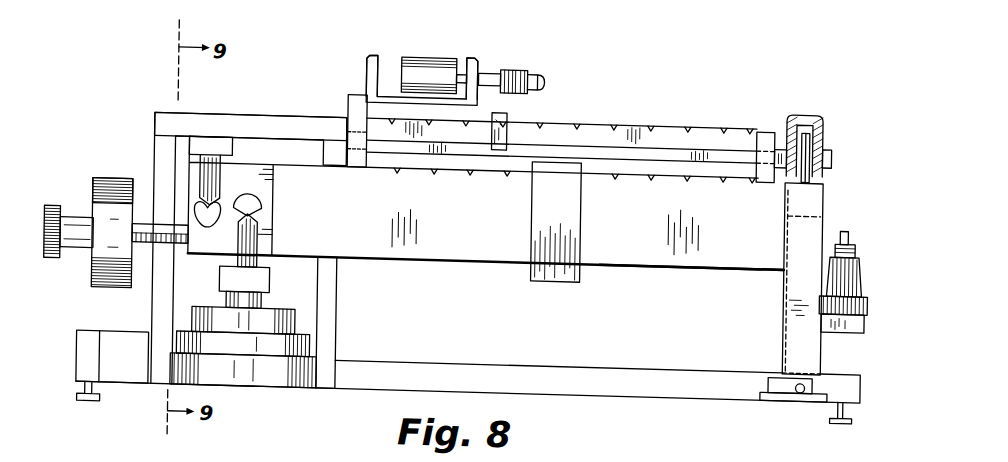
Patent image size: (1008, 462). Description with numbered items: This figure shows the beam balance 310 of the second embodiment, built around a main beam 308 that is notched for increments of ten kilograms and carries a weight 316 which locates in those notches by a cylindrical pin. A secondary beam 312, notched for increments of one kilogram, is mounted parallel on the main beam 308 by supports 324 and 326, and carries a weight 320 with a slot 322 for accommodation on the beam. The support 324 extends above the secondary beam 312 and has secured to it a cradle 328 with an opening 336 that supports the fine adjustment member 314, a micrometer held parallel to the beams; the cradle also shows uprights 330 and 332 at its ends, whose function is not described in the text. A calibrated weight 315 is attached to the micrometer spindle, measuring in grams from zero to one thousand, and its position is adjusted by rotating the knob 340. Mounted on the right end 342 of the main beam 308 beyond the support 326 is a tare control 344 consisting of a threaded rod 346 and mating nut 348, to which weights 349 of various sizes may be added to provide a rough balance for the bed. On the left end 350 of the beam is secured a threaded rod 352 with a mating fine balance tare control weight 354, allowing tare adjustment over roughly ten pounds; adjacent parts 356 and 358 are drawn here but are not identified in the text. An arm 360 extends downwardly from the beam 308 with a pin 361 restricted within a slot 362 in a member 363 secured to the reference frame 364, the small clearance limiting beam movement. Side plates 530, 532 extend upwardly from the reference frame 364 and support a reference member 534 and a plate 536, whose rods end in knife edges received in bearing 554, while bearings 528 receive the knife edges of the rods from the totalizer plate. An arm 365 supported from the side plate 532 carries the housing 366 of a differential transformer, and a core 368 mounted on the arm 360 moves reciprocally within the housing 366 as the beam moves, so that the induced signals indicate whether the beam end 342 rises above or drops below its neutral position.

The main beam 308 is at (495, 226).
The beam balance 310 is at (300, 112).
The secondary beam 312 is at (698, 122).
The fine adjustment member 314 is at (538, 67).
The calibrated weight 315 is at (437, 55).
The weight 316 is at (580, 202).
The weight 320 is at (495, 122).
The slot 322 is at (507, 119).
The support 324 is at (350, 124).
The support 326 is at (772, 124).
The cradle 328 is at (384, 103).
The left upright 330 is at (369, 58).
The right upright 332 is at (471, 61).
The opening 336 is at (477, 73).
The knob 340 is at (545, 76).
The right end 342 is at (757, 251).
The tare control 344 is at (857, 218).
The threaded rod 346 is at (842, 222).
The nut 348 is at (849, 247).
The weights 349 is at (868, 281).
The left end 350 is at (349, 251).
The threaded rod 352 is at (143, 232).
The fine balance tare control weight 354 is at (88, 182).
The hub shaft 356 is at (108, 299).
The knob 358 is at (50, 270).
The arm 360 is at (792, 328).
The pin 361 is at (795, 385).
The slot 362 is at (814, 393).
The member 363 is at (762, 390).
The reference frame 364 is at (560, 387).
The arm 365 is at (584, 150).
The housing 366 is at (821, 116).
The core 368 is at (809, 171).
The bearings 528 is at (248, 212).
The side plate 530 is at (162, 390).
The side plate 532 is at (325, 388).
The reference member 534 is at (218, 133).
The plate 536 is at (231, 157).
The bearing 554 is at (208, 235).